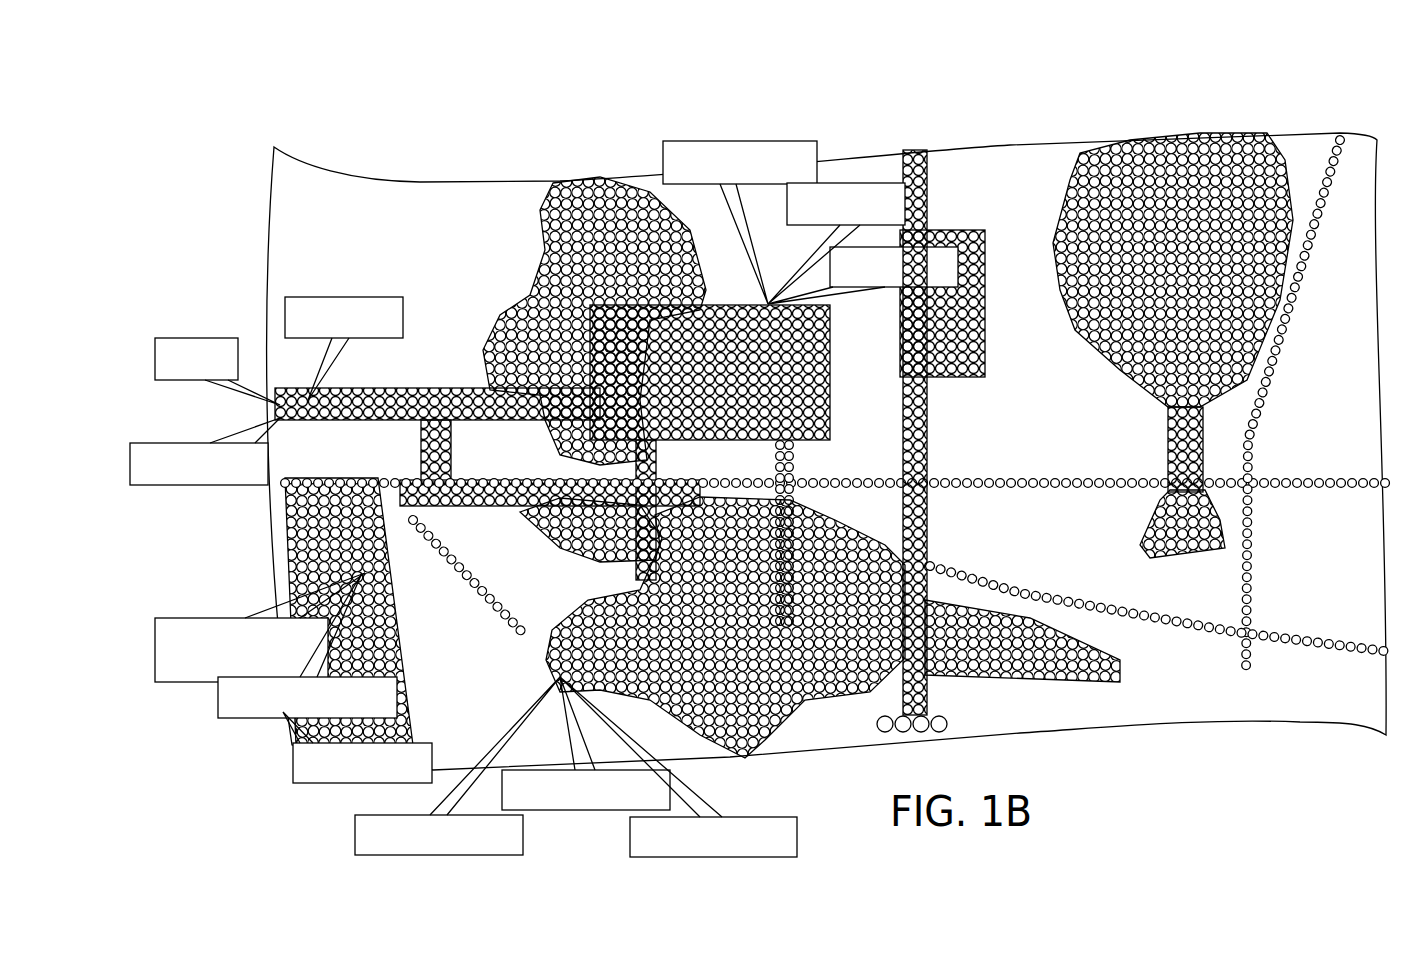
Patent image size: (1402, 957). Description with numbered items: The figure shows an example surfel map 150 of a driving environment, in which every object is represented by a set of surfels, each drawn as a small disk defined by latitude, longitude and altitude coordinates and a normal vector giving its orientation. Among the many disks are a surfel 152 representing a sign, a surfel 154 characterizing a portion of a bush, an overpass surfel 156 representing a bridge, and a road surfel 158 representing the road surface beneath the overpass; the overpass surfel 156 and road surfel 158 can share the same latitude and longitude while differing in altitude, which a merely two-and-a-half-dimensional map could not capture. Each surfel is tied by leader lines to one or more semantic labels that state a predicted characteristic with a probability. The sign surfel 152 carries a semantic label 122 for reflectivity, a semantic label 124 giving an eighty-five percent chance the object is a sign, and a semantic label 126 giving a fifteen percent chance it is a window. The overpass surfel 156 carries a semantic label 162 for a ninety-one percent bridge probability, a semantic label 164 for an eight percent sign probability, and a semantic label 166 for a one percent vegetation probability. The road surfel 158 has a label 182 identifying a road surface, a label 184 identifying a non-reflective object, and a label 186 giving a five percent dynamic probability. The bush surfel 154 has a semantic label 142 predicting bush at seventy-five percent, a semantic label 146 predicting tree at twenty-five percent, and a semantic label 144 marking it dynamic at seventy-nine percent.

The surfel map 150 is at (196, 52).
The semantic label 122 is at (740, 141).
The semantic label 124 is at (866, 183).
The semantic label 126 is at (963, 230).
The surfel 152 is at (768, 304).
The surfel 154 is at (560, 677).
The overpass surfel 156 is at (320, 434).
The road surfel 158 is at (390, 592).
The semantic label 162 is at (345, 298).
The semantic label 164 is at (155, 360).
The semantic label 166 is at (130, 468).
The semantic label 182 is at (165, 618).
The semantic label 184 is at (220, 700).
The semantic label 186 is at (294, 765).
The semantic label 142 is at (530, 810).
The semantic label 144 is at (430, 855).
The semantic label 146 is at (720, 857).